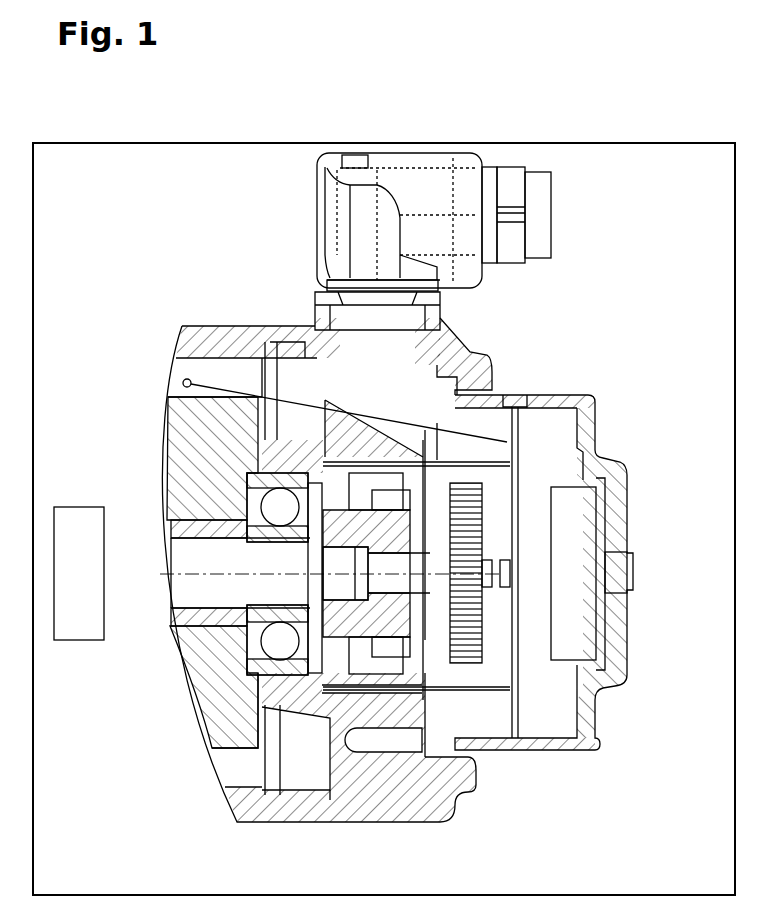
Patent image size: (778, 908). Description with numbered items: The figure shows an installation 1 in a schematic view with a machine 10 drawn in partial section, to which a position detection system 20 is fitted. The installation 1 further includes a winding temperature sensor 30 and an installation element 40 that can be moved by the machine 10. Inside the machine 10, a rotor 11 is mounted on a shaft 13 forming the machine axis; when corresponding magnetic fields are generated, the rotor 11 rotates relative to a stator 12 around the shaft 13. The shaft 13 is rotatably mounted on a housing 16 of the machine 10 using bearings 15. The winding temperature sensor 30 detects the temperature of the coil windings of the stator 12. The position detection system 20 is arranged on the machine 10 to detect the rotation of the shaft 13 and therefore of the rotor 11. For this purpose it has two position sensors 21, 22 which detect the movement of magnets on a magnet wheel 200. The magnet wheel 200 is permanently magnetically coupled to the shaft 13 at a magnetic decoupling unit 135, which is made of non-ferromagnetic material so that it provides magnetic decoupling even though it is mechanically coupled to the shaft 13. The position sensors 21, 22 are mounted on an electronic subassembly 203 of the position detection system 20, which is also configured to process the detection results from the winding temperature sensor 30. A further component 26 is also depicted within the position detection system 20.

The installation 1 is at (646, 143).
The machine 10 is at (148, 276).
The rotor 11 is at (180, 525).
The stator 12 is at (190, 420).
The shaft 13 is at (205, 594).
The bearings 15 is at (240, 665).
The housing 16 is at (380, 825).
The position detection system 20 is at (538, 705).
The position sensor 21 is at (494, 475).
The position sensor 22 is at (503, 572).
The electronic component 26 is at (575, 517).
The winding temperature sensor 30 is at (183, 383).
The installation element 40 is at (80, 507).
The magnetic decoupling unit 135 is at (430, 572).
The magnet wheel 200 is at (478, 628).
The electronic subassembly 203 is at (517, 407).